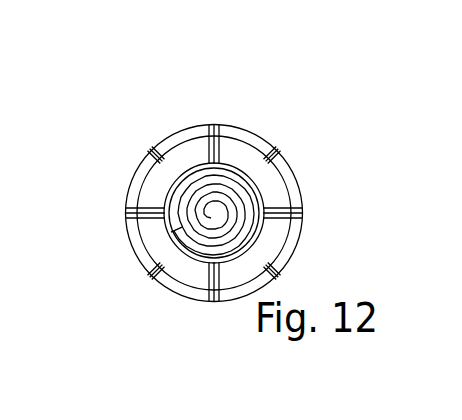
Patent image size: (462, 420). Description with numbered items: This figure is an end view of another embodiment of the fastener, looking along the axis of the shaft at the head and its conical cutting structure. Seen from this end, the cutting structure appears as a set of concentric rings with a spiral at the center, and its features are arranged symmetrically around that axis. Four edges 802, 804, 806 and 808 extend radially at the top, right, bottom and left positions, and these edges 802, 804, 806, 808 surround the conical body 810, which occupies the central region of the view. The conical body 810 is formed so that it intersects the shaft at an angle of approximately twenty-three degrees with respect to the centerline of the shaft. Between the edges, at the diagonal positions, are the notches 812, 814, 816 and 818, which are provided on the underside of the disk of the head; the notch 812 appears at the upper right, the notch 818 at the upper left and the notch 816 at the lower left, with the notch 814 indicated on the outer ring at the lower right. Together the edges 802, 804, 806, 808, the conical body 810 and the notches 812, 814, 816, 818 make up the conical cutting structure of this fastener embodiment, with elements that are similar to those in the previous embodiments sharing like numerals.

The edge 802 is at (165, 99).
The edge 804 is at (333, 184).
The edge 806 is at (137, 311).
The edge 808 is at (120, 204).
The conical body 810 is at (158, 197).
The notch 812 is at (303, 102).
The notch 814 is at (254, 213).
The notch 816 is at (86, 300).
The notch 818 is at (105, 127).